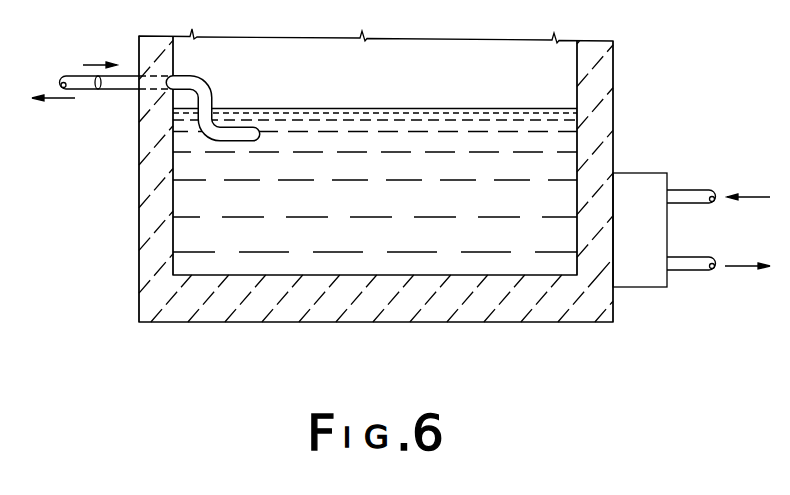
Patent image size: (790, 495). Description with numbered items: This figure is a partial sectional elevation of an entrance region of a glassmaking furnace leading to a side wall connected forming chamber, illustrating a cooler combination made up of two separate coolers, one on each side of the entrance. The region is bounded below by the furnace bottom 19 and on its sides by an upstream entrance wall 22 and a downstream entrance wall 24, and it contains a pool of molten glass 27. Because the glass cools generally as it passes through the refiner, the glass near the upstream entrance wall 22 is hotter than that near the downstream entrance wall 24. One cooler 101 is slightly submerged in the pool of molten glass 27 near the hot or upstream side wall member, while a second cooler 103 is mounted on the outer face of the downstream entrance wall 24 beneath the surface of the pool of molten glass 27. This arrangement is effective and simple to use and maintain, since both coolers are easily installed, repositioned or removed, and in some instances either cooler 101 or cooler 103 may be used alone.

The furnace bottom 19 is at (342, 323).
The upstream entrance wall 22 is at (139, 153).
The downstream entrance wall 24 is at (613, 89).
The pool of molten glass 27 is at (398, 243).
The cooler 101 is at (72, 77).
The second cooler 103 is at (641, 288).